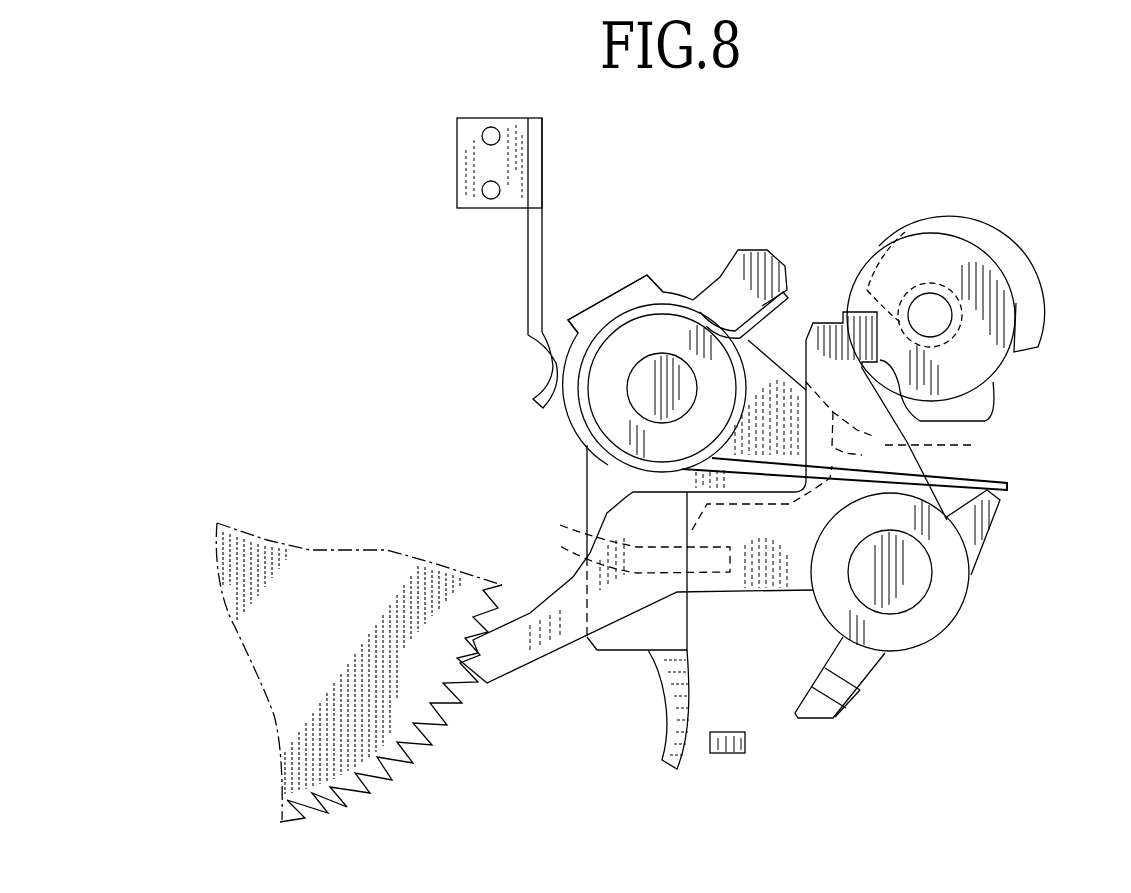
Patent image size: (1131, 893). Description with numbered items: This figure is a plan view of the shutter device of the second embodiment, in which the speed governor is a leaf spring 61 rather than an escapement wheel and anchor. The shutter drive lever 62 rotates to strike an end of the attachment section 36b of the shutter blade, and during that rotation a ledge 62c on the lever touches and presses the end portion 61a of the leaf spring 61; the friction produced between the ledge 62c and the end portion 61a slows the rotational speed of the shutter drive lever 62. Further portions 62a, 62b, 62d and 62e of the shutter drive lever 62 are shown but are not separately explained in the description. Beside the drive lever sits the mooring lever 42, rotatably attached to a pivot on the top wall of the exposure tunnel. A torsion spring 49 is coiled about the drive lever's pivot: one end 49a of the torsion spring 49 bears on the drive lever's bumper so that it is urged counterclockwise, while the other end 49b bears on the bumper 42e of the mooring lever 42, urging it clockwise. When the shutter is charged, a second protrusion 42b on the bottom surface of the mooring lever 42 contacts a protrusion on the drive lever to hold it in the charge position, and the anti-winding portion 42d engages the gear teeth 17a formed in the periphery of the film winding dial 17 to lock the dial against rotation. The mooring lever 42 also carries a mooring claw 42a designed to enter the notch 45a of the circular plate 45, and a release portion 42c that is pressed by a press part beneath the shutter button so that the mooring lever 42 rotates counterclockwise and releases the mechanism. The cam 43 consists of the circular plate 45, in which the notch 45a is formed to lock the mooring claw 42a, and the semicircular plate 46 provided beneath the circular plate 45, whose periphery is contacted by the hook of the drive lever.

The film winding dial 17 is at (290, 712).
The gear teeth 17a is at (382, 768).
The attachment section 36b is at (729, 757).
The mooring lever 42 is at (962, 627).
The mooring claw 42a is at (843, 310).
The second protrusion 42b is at (700, 545).
The release portion 42c is at (838, 700).
The anti-winding portion 42d is at (483, 667).
The bumper 42e is at (998, 505).
The cam 43 is at (978, 304).
The circular plate 45 is at (978, 372).
The notch 45a is at (925, 422).
The semicircular plate 46 is at (1035, 307).
The torsion spring 49 is at (603, 450).
The one end of torsion spring 49a is at (797, 260).
The other end of torsion spring 49b is at (1008, 487).
The leaf spring 61 is at (528, 256).
The end portion 61a is at (545, 378).
The shutter drive lever 62 is at (630, 256).
The leg of release lever 62a is at (678, 775).
The hidden edge of release lever 62b is at (920, 421).
The ledge 62c is at (612, 300).
The hidden slot of release lever 62d is at (580, 547).
The block of release lever 62e is at (737, 256).